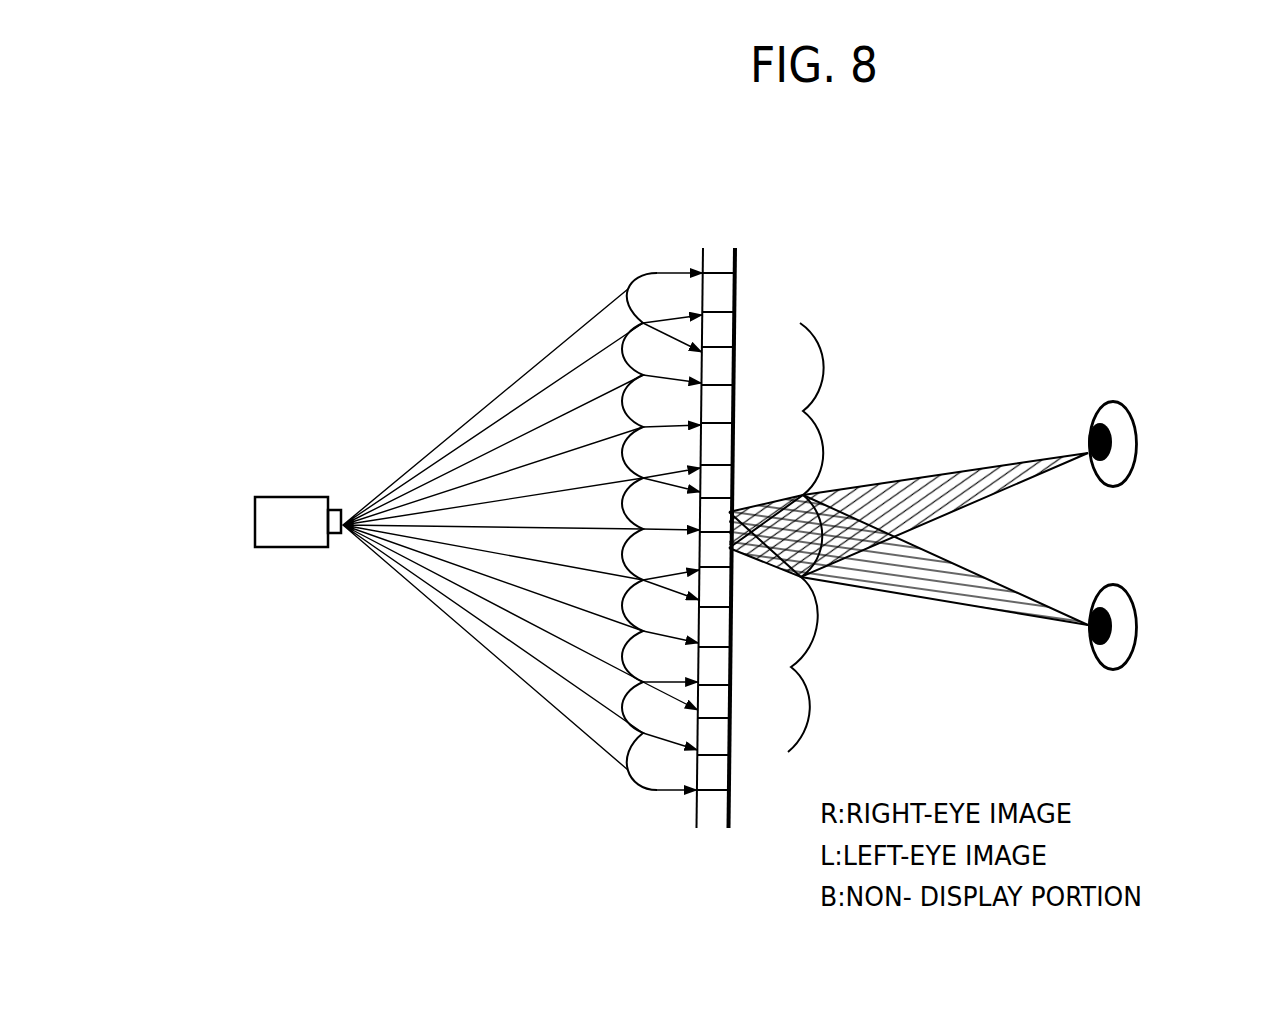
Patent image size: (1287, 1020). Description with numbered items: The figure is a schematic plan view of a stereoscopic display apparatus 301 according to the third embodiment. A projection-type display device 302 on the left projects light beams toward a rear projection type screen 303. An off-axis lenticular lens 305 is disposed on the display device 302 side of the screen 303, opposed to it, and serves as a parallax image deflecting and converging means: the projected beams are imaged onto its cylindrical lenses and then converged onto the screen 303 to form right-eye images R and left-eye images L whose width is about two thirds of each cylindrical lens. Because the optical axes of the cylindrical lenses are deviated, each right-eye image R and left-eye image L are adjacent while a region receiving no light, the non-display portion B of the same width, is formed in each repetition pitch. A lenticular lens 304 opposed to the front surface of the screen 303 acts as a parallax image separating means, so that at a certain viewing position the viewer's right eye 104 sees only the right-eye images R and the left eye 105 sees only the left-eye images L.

The stereoscopic display apparatus 301 is at (568, 260).
The projection-type display device 302 is at (290, 497).
The rear projection type screen 303 is at (737, 264).
The lenticular lens 304 is at (806, 326).
The off-axis lenticular lens 305 is at (613, 760).
The right eye 104 is at (1111, 401).
The left eye 105 is at (1114, 585).